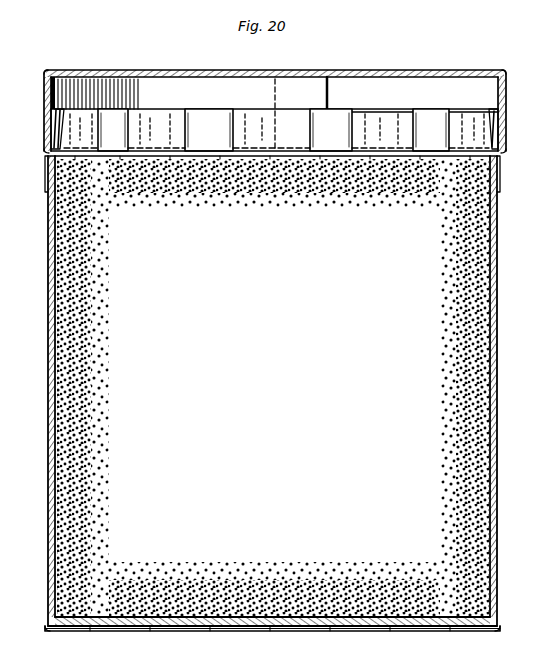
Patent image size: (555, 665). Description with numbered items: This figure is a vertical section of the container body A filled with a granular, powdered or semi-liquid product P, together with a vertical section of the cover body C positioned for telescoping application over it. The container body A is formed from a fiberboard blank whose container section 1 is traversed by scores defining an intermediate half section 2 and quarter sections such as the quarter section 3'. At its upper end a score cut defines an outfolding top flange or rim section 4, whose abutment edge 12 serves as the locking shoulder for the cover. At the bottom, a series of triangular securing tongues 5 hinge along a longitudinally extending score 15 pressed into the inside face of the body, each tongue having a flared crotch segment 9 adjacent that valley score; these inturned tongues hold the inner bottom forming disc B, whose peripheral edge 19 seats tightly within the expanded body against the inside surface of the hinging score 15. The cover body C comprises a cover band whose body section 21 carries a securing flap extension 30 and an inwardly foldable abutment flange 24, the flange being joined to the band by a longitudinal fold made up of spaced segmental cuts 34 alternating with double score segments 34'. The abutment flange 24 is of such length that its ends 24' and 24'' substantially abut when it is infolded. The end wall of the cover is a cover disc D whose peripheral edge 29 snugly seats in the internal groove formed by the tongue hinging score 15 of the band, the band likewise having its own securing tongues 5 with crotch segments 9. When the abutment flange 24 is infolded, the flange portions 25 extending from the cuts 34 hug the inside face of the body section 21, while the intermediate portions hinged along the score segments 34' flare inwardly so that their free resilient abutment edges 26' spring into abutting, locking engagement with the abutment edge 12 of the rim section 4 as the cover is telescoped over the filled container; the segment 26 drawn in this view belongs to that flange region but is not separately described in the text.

The container section 1 is at (42, 341).
The intermediate half section 2 is at (498, 388).
The quarter section 3' is at (36, 401).
The outfolding top flange or rim section 4 is at (45, 178).
The securing tongues 5 is at (96, 70).
The crotch segment 9 is at (50, 72).
The abutment edge 12 is at (55, 186).
The longitudinally extending score 15 is at (42, 69).
The peripheral edge 19 is at (500, 613).
The body section 21 is at (39, 100).
The abutment flange 24 is at (273, 96).
The end of abutment flange 24' is at (290, 113).
The end of abutment flange 24'' is at (258, 104).
The flange portions 25 is at (212, 122).
The lid segment 26 is at (275, 118).
The resilient abutment edges 26' is at (274, 80).
The peripheral edge of cover disc 29 is at (507, 72).
The securing flap extension 30 is at (297, 90).
The segmental cuts 34 is at (274, 189).
The score segments 34' is at (276, 185).
The container body A is at (508, 251).
The inner bottom forming disc B is at (312, 614).
The cover body C is at (515, 69).
The cover disc D is at (438, 70).
The product space P is at (291, 387).